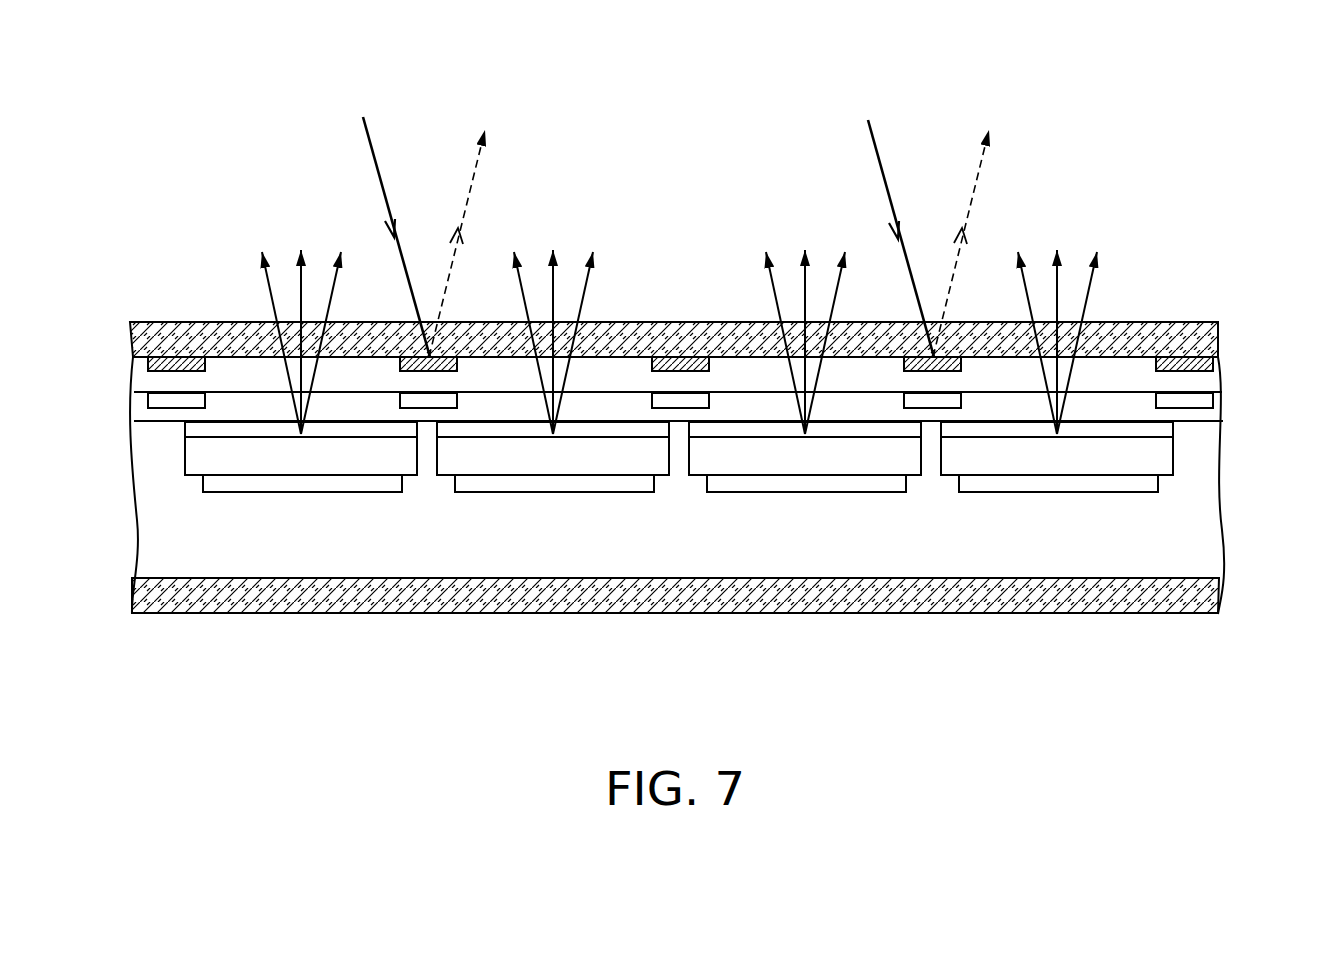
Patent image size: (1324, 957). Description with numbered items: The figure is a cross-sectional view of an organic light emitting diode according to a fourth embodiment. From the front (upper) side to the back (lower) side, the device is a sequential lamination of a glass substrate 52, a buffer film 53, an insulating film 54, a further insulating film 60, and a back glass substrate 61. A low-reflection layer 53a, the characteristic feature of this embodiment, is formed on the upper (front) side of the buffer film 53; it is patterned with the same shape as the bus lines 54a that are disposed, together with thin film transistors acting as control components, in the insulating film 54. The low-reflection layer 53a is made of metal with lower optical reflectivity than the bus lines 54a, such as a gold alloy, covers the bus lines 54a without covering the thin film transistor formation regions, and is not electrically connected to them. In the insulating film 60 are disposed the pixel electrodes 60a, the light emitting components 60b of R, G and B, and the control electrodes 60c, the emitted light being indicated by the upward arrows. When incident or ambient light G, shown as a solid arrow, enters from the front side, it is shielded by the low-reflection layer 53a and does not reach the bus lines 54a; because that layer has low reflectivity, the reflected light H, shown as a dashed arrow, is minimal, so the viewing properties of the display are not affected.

The glass substrate 52 is at (1215, 337).
The buffer film 53 is at (1210, 385).
The low-reflection layer 53a is at (457, 367).
The insulating film 54 is at (1210, 418).
The bus lines 54a is at (408, 400).
The insulating film 60 is at (1208, 527).
The pixel electrodes 60a is at (202, 432).
The light emitting components 60b is at (202, 460).
The control electrodes 60c is at (212, 482).
The glass substrate 61 is at (1210, 600).
The incident/ambient light G is at (373, 158).
The reflected light H is at (477, 168).